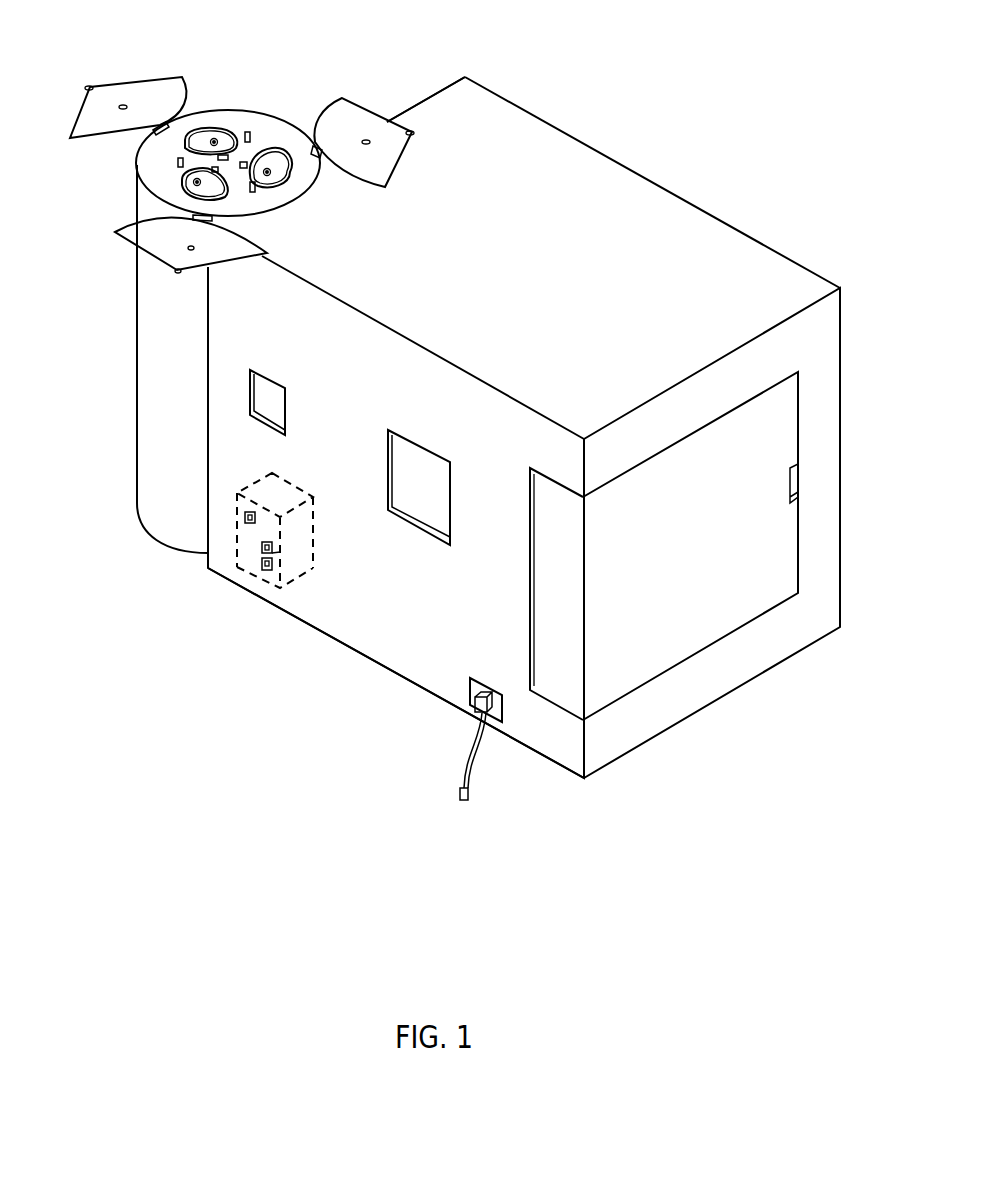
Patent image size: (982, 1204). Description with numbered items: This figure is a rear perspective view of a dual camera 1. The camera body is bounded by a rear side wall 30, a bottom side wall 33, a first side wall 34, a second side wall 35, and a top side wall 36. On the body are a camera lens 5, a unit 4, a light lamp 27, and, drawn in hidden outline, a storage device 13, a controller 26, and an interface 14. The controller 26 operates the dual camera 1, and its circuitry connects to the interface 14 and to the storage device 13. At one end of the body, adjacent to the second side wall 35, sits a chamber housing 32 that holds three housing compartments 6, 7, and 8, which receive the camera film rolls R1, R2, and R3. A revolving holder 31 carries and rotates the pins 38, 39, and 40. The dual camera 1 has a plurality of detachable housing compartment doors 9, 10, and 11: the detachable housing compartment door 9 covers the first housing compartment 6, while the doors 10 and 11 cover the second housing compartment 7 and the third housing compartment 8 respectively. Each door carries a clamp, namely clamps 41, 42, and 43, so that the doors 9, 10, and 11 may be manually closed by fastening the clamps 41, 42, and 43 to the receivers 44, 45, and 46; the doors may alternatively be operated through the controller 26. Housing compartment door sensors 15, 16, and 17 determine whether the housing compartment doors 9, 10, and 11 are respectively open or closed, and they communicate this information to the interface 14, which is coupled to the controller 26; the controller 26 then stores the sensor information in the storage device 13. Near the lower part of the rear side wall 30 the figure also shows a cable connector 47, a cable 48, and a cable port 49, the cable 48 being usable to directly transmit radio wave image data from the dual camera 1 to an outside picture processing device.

The dual camera 1 is at (757, 117).
The unit 4 is at (243, 548).
The camera lens 5 is at (418, 452).
The first housing compartment 6 is at (205, 128).
The second housing compartment 7 is at (292, 170).
The third housing compartment 8 is at (184, 183).
The detachable housing compartment door 9 is at (88, 116).
The detachable housing compartment door 10 is at (385, 170).
The detachable housing compartment door 11 is at (130, 240).
The storage device 13 is at (252, 525).
The interface 14 is at (272, 548).
The housing compartment door sensor 15 is at (245, 133).
The housing compartment door sensor 16 is at (255, 186).
The housing compartment door sensor 17 is at (178, 162).
The controller 26 is at (280, 552).
The light lamp 27 is at (268, 388).
The rear side wall 30 is at (407, 668).
The revolving holder 31 is at (144, 154).
The chamber housing 32 is at (147, 410).
The bottom side wall 33 is at (617, 170).
The first side wall 34 is at (626, 748).
The second side wall 35 is at (442, 87).
The top side wall 36 is at (553, 760).
The pin 38 is at (124, 104).
The pin 39 is at (366, 139).
The pin 40 is at (194, 250).
The clamp 41 is at (89, 84).
The clamp 42 is at (409, 130).
The clamp 43 is at (178, 275).
The receiver 44 is at (223, 155).
The receiver 45 is at (214, 172).
The receiver 46 is at (243, 163).
The cable connector 47 is at (492, 705).
The cable 48 is at (462, 772).
The cable port 49 is at (472, 687).
The camera film roll R1 is at (211, 133).
The camera film roll R2 is at (277, 155).
The camera film roll R3 is at (183, 188).